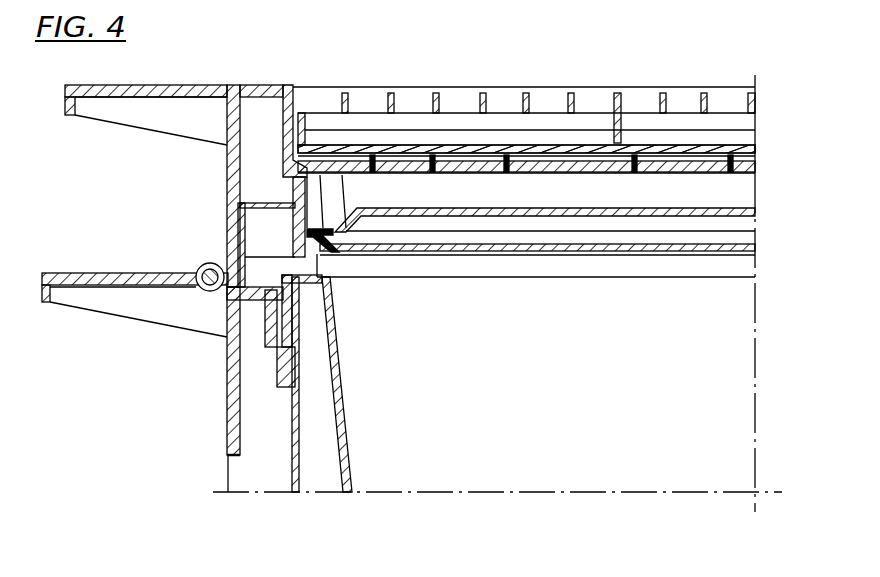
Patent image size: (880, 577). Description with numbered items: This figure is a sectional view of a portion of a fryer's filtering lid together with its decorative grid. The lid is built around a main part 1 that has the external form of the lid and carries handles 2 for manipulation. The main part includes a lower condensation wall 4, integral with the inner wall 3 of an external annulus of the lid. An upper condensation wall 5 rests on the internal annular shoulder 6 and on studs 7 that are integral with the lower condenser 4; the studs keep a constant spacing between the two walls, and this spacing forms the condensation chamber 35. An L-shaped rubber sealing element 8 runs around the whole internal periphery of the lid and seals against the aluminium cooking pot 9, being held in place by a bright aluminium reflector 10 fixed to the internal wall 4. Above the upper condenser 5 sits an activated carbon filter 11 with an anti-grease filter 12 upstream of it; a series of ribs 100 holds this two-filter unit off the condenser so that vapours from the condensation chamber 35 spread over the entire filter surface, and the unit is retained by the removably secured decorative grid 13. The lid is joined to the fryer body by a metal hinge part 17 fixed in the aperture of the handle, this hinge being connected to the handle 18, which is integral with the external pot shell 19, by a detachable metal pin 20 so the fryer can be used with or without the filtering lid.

The main part 1 is at (276, 46).
The handles 2 is at (138, 85).
The inner wall 3 is at (296, 190).
The lower condensation wall 4 is at (545, 214).
The upper condensation wall 5 is at (543, 156).
The internal annular shoulder 6 is at (297, 160).
The studs 7 is at (338, 200).
The rubber sealing element 8 is at (334, 249).
The cooking pot 9 is at (346, 440).
The reflector 10 is at (632, 253).
The activated carbon filter 11 is at (362, 150).
The anti-grease filter 12 is at (362, 150).
The decorative grid 13 is at (670, 95).
The metal hinge part 17 is at (240, 233).
The handle 18 is at (227, 395).
The external pot shell 19 is at (292, 460).
The detachable metal pin 20 is at (198, 287).
The condensation chamber 35 is at (624, 186).
The ribs 100 is at (470, 146).